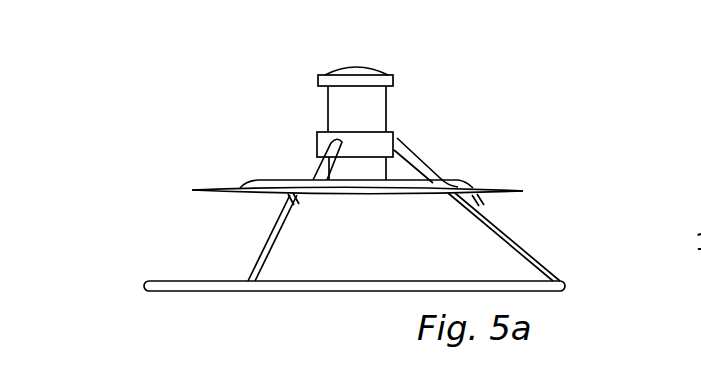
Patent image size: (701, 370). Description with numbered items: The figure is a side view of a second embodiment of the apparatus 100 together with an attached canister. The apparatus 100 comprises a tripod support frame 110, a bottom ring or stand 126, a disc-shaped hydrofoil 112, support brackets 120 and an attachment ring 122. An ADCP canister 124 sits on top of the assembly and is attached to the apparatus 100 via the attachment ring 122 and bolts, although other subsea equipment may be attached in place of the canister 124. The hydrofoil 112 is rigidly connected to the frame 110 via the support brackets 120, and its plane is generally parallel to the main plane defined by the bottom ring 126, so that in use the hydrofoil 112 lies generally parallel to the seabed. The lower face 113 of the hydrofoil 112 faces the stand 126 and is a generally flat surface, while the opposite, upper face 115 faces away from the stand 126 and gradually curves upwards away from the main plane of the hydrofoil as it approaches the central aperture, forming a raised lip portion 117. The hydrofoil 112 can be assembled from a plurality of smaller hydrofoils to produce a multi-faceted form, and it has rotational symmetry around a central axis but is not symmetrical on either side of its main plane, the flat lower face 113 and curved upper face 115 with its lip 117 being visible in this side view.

The apparatus 100 is at (593, 112).
The tripod support frame 110 is at (522, 253).
The disc-shaped hydrofoil 112 is at (500, 182).
The lower face 113 is at (242, 193).
The upper face 115 is at (258, 180).
The raised lip portion 117 is at (450, 182).
The support brackets 120 is at (482, 202).
The attachment ring 122 is at (392, 138).
The ADCP canister 124 is at (341, 94).
The bottom ring or stand 126 is at (553, 285).